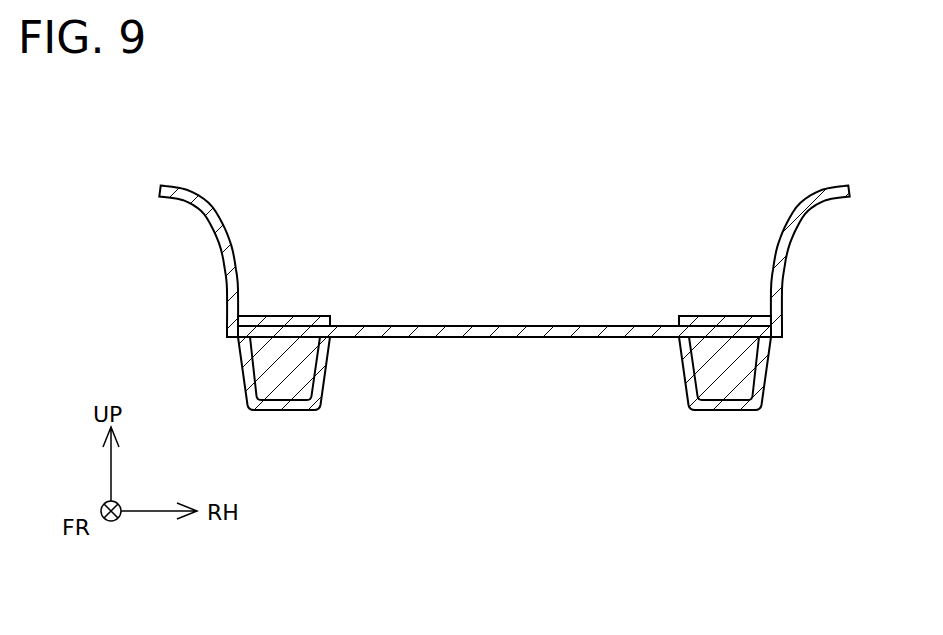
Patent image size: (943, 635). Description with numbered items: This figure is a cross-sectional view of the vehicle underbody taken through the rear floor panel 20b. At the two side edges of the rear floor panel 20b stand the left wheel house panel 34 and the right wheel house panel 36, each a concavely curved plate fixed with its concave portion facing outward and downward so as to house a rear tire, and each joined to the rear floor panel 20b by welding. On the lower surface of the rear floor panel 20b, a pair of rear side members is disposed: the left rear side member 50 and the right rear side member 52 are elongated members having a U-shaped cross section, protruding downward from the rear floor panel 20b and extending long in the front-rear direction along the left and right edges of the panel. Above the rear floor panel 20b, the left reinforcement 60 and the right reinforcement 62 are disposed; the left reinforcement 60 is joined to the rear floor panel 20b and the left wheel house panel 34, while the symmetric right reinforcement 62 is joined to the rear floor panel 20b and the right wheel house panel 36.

The left wheel house panel 34 is at (198, 200).
The right wheel house panel 36 is at (811, 200).
The rear floor panel 20b is at (505, 332).
The left reinforcement 60 is at (297, 322).
The right reinforcement 62 is at (712, 322).
The left rear side member 50 is at (285, 405).
The right rear side member 52 is at (723, 405).